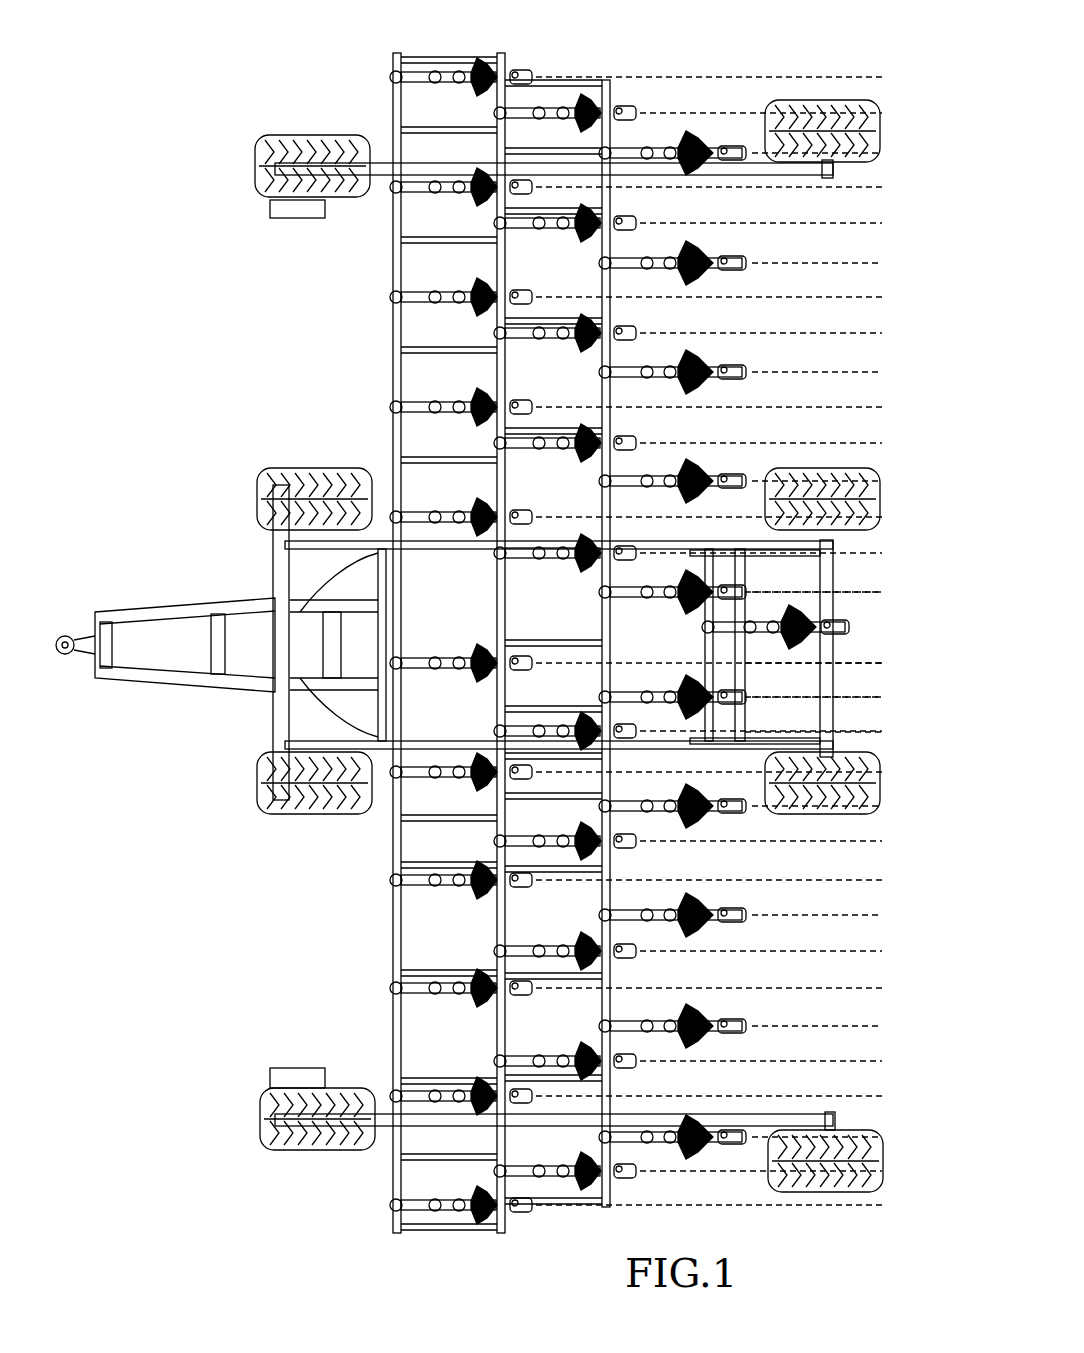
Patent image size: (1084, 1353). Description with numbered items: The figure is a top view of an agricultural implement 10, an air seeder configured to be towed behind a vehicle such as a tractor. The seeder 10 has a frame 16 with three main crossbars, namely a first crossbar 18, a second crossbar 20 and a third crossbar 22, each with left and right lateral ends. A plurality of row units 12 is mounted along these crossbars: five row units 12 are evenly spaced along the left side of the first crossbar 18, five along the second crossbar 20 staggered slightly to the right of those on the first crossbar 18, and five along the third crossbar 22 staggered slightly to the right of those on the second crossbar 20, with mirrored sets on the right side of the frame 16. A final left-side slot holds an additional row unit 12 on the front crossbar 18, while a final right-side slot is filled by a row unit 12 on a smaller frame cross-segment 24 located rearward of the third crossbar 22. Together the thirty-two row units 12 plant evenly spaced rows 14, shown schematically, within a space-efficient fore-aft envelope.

The agricultural implement 10 is at (502, 628).
The row unit 12 is at (438, 392).
The row 14 is at (866, 192).
The frame 16 is at (452, 628).
The first crossbar 18 is at (390, 120).
The second crossbar 20 is at (505, 102).
The third crossbar 22 is at (614, 105).
The frame cross-segment 24 is at (712, 612).